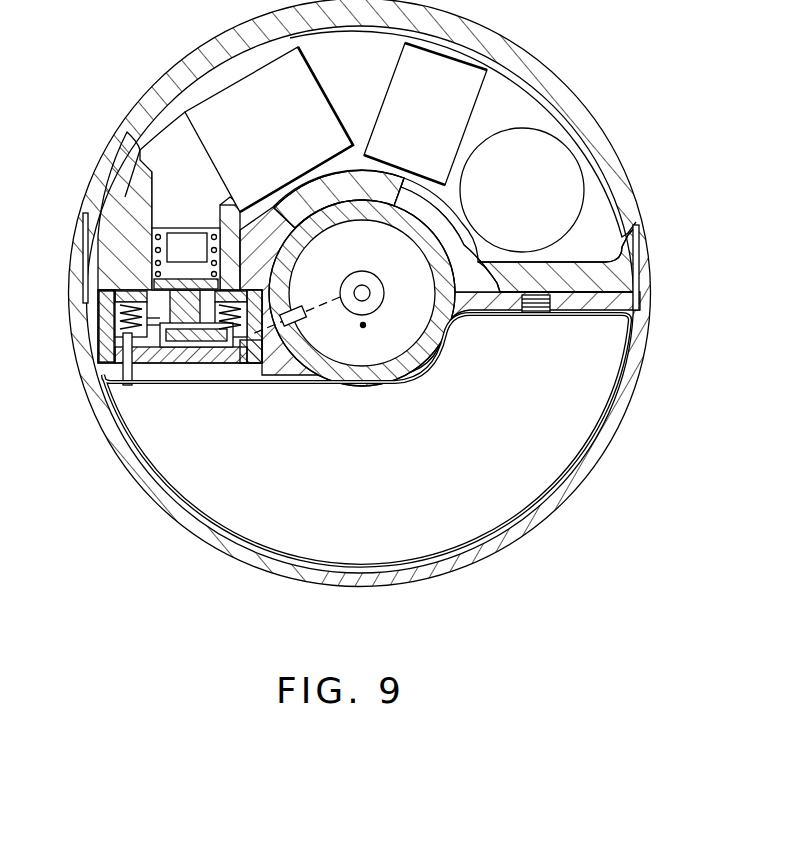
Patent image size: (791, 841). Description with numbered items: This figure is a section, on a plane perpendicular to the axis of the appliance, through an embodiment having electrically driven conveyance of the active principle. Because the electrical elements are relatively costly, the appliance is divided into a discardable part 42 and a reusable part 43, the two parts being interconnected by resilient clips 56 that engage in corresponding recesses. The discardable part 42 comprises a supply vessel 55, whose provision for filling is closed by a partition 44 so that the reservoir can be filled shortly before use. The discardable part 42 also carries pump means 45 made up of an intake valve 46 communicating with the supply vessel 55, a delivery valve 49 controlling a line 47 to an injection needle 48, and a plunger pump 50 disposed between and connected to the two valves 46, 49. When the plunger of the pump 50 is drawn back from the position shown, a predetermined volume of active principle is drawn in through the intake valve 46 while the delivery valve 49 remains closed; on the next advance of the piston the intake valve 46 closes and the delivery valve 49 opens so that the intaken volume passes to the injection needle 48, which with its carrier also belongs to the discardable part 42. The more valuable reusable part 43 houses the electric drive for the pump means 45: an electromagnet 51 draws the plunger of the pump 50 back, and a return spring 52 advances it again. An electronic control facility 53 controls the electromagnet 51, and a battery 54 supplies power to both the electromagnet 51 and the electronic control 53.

The discardable part 42 is at (94, 392).
The reusable part 43 is at (106, 167).
The partition 44 is at (537, 316).
The pump means 45 is at (104, 320).
The intake valve 46 is at (133, 376).
The line 47 is at (307, 316).
The injection needle 48 is at (373, 307).
The delivery valve 49 is at (252, 362).
The plunger pump 50 is at (106, 281).
The electromagnet 51 is at (207, 113).
The return spring 52 is at (155, 237).
The electronic control facility 53 is at (453, 73).
The battery 54 is at (550, 158).
The supply vessel 55 is at (204, 493).
The resilient clips 56 is at (640, 248).